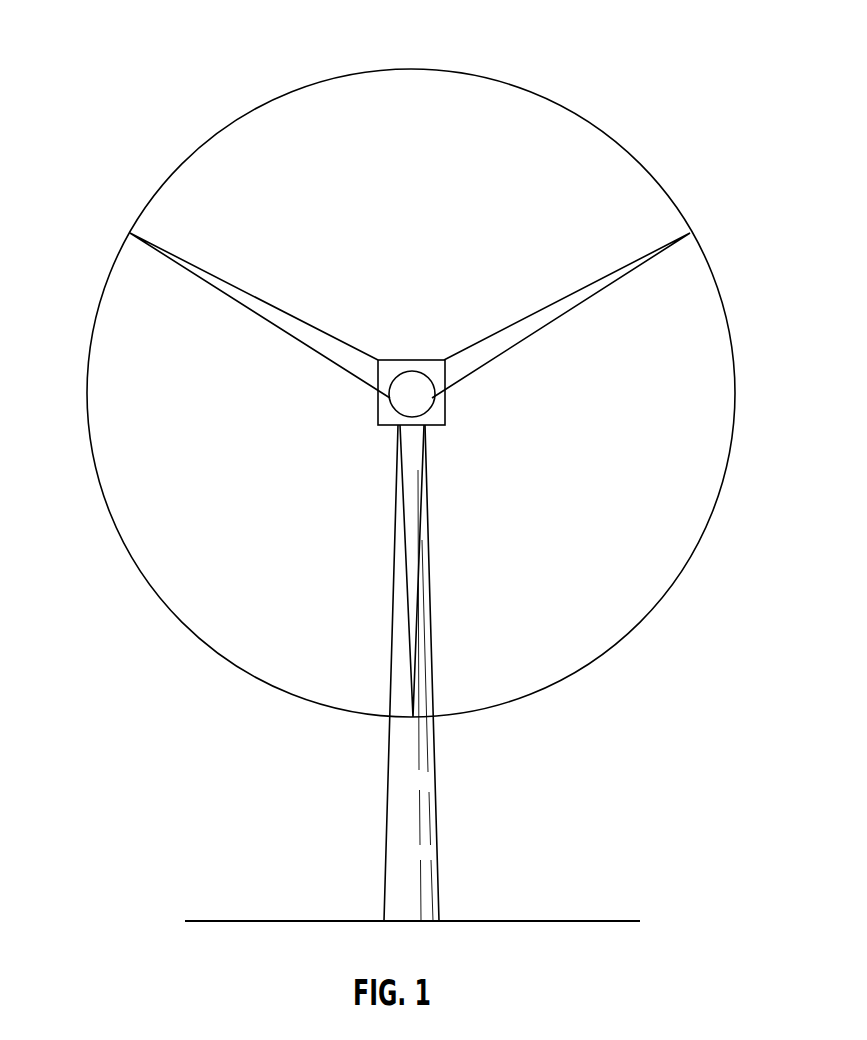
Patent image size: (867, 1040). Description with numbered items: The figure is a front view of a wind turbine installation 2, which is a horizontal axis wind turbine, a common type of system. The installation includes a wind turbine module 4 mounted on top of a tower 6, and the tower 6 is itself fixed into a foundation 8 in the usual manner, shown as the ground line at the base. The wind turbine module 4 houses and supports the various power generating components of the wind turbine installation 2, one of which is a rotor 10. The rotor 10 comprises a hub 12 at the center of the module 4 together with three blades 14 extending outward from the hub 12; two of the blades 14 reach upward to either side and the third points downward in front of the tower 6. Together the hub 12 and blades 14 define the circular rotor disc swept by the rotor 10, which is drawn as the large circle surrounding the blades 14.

The wind turbine installation 2 is at (618, 63).
The wind turbine module 4 is at (412, 372).
The tower 6 is at (434, 752).
The foundation 8 is at (600, 921).
The rotor 10 is at (500, 405).
The hub 12 is at (400, 403).
The blades 14 is at (287, 325).